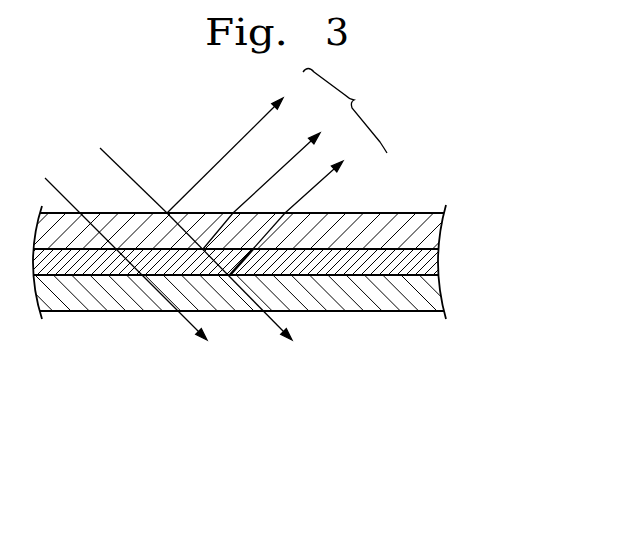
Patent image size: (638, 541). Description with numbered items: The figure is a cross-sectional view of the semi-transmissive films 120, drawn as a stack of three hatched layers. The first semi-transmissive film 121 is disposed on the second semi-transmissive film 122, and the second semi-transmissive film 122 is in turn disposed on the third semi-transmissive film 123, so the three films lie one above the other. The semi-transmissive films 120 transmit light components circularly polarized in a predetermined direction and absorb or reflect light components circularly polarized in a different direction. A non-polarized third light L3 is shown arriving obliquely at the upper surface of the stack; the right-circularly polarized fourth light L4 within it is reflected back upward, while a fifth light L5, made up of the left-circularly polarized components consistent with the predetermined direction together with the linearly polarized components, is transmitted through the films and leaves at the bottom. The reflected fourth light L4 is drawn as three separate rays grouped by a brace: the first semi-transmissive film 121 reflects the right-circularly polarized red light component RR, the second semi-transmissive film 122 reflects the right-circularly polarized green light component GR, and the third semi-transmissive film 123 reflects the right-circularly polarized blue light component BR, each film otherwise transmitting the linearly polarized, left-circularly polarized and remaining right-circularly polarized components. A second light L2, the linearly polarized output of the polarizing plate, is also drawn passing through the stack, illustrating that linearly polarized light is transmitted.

The semi-transmissive films 120 is at (259, 223).
The first semi-transmissive film 121 is at (453, 230).
The second semi-transmissive film 122 is at (451, 262).
The third semi-transmissive film 123 is at (443, 297).
The second light L2 is at (118, 247).
The third light L3 is at (126, 168).
The fourth light L4 is at (345, 111).
The fifth light L5 is at (243, 287).
The right-circularly polarized red light component RR is at (239, 147).
The right-circularly polarized green light component GR is at (275, 183).
The right-circularly polarized blue light component BR is at (300, 208).